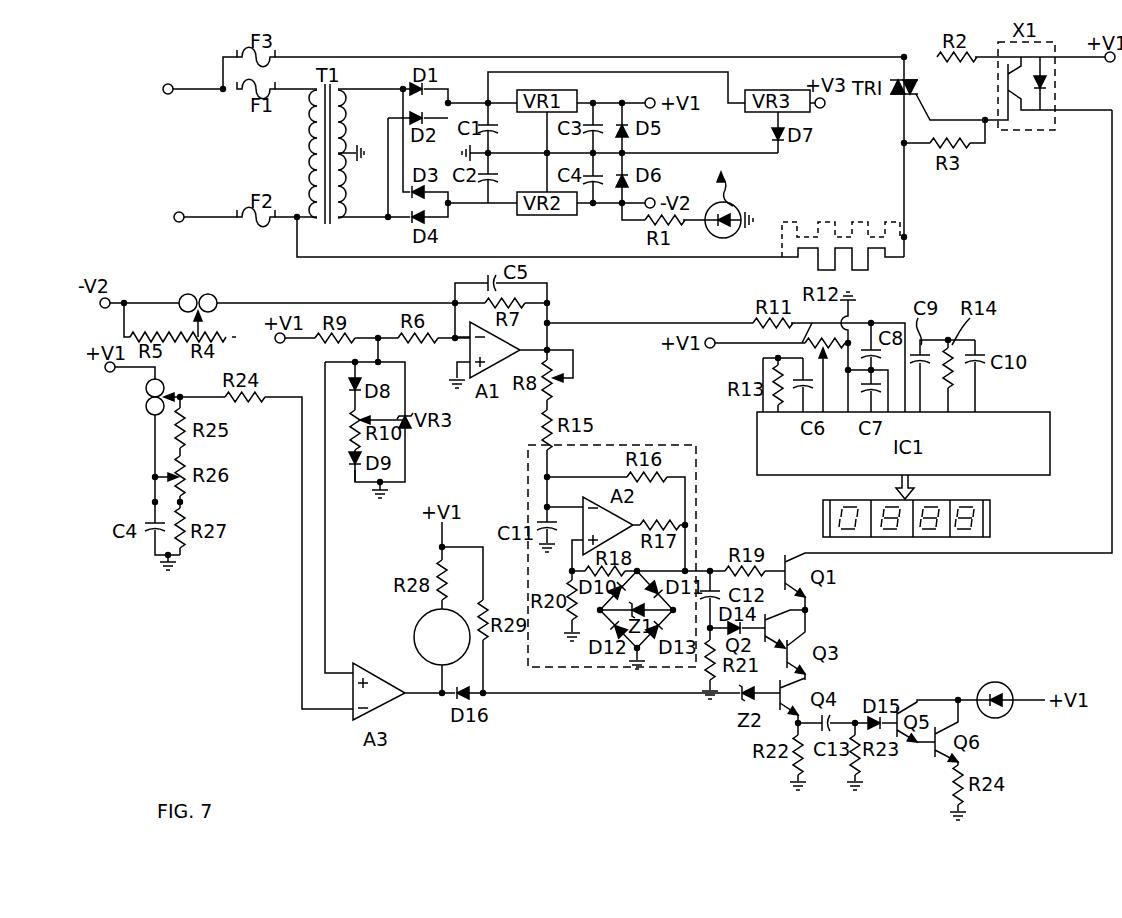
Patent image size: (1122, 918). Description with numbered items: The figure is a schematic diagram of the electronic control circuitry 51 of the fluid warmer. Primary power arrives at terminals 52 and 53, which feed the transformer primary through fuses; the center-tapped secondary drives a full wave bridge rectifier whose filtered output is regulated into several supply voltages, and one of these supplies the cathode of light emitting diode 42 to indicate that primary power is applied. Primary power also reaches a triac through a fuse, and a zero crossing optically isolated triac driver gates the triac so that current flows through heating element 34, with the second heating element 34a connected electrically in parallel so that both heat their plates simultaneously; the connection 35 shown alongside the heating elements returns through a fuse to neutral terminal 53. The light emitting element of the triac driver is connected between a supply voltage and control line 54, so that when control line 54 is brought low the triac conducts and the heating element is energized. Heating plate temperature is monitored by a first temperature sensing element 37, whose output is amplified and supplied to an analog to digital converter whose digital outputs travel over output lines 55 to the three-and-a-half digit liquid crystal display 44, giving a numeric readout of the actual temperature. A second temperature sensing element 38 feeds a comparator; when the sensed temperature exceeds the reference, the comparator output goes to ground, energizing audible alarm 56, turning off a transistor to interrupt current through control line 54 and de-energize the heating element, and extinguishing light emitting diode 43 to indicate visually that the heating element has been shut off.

The terminal 52 is at (168, 84).
The neutral terminal 53 is at (176, 222).
The first temperature sensing element 37 is at (198, 292).
The second temperature sensing element 38 is at (141, 397).
The electronic control circuitry 51 is at (243, 605).
The light emitting diode 42 is at (741, 212).
The heating element 34 is at (862, 268).
The second heating element 34a is at (826, 222).
The power conductor 35 is at (906, 226).
The control line 54 is at (1112, 245).
The output lines 55 is at (915, 485).
The liquid crystal display 44 is at (933, 538).
The light emitting diode 43 is at (1011, 690).
The audible alarm 56 is at (428, 637).